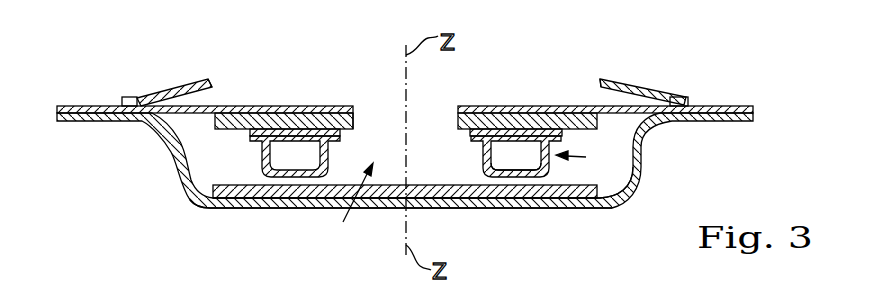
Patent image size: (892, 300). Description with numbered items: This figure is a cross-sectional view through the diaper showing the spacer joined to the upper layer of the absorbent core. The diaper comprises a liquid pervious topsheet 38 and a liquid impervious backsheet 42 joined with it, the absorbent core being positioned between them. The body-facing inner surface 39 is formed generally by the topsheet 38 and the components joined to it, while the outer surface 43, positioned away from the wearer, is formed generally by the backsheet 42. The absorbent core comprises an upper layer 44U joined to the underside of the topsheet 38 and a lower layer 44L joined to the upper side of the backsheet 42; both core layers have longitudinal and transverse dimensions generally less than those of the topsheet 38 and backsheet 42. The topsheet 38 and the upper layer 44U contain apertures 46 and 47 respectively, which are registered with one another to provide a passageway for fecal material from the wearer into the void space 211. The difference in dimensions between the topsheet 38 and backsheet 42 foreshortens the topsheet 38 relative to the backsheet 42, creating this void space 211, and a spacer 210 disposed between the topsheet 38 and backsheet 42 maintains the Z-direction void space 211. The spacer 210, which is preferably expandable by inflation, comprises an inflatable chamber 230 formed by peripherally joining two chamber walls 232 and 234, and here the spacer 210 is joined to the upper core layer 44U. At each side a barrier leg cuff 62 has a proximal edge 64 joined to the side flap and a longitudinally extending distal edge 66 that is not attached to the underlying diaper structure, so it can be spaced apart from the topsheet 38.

The topsheet 38 is at (522, 106).
The inner surface 39 is at (256, 106).
The backsheet 42 is at (648, 150).
The outer surface 43 is at (262, 208).
The upper layer 44U is at (573, 120).
The lower layer 44L is at (583, 192).
The aperture 46 is at (353, 108).
The aperture 47 is at (355, 118).
The barrier leg cuff 62 is at (178, 90).
The proximal edge 64 is at (128, 96).
The distal edge 66 is at (212, 86).
The spacer 210 is at (596, 161).
The void space 211 is at (353, 209).
The inflatable chamber 230 is at (286, 157).
The chamber wall 232 is at (486, 150).
The chamber wall 234 is at (487, 160).